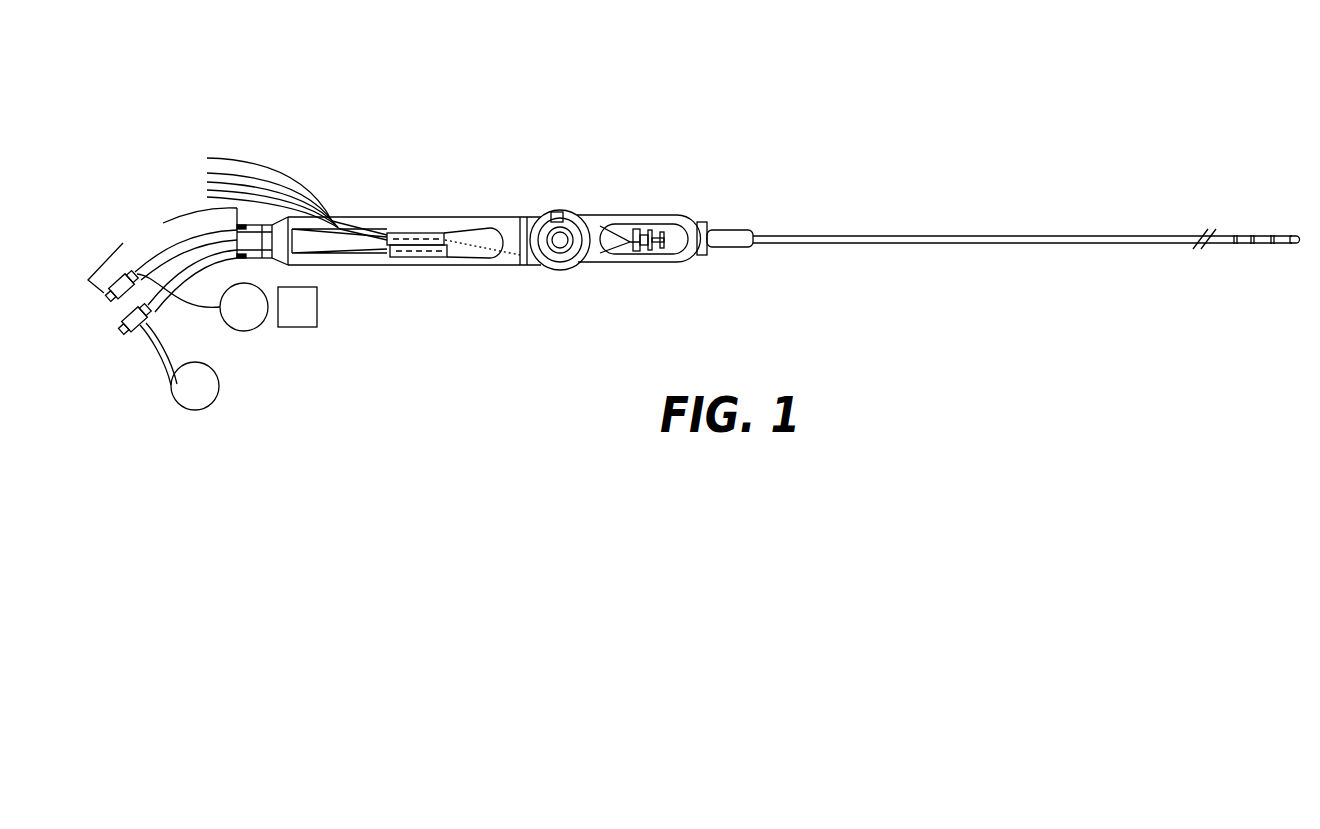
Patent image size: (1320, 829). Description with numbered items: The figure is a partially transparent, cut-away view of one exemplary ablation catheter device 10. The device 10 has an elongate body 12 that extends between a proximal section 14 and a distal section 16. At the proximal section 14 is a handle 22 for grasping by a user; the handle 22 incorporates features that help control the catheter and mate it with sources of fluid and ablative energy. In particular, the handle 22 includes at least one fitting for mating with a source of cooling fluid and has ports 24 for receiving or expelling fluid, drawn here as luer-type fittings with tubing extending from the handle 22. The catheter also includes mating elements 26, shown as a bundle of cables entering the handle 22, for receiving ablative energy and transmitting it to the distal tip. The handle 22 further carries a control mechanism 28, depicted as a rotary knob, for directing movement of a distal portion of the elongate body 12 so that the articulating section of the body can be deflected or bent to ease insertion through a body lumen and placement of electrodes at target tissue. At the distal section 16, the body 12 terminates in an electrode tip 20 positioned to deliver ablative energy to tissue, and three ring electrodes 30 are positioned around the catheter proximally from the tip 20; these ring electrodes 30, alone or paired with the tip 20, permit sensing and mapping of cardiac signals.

The ablation catheter device 10 is at (902, 130).
The elongate body 12 is at (897, 244).
The proximal section 14 is at (497, 187).
The distal section 16 is at (1194, 150).
The electrode tip 20 is at (1299, 258).
The handle 22 is at (453, 267).
The ports 24 is at (73, 306).
The mating elements 26 is at (229, 130).
The control mechanism 28 is at (562, 238).
The ring electrodes 30 is at (1251, 236).